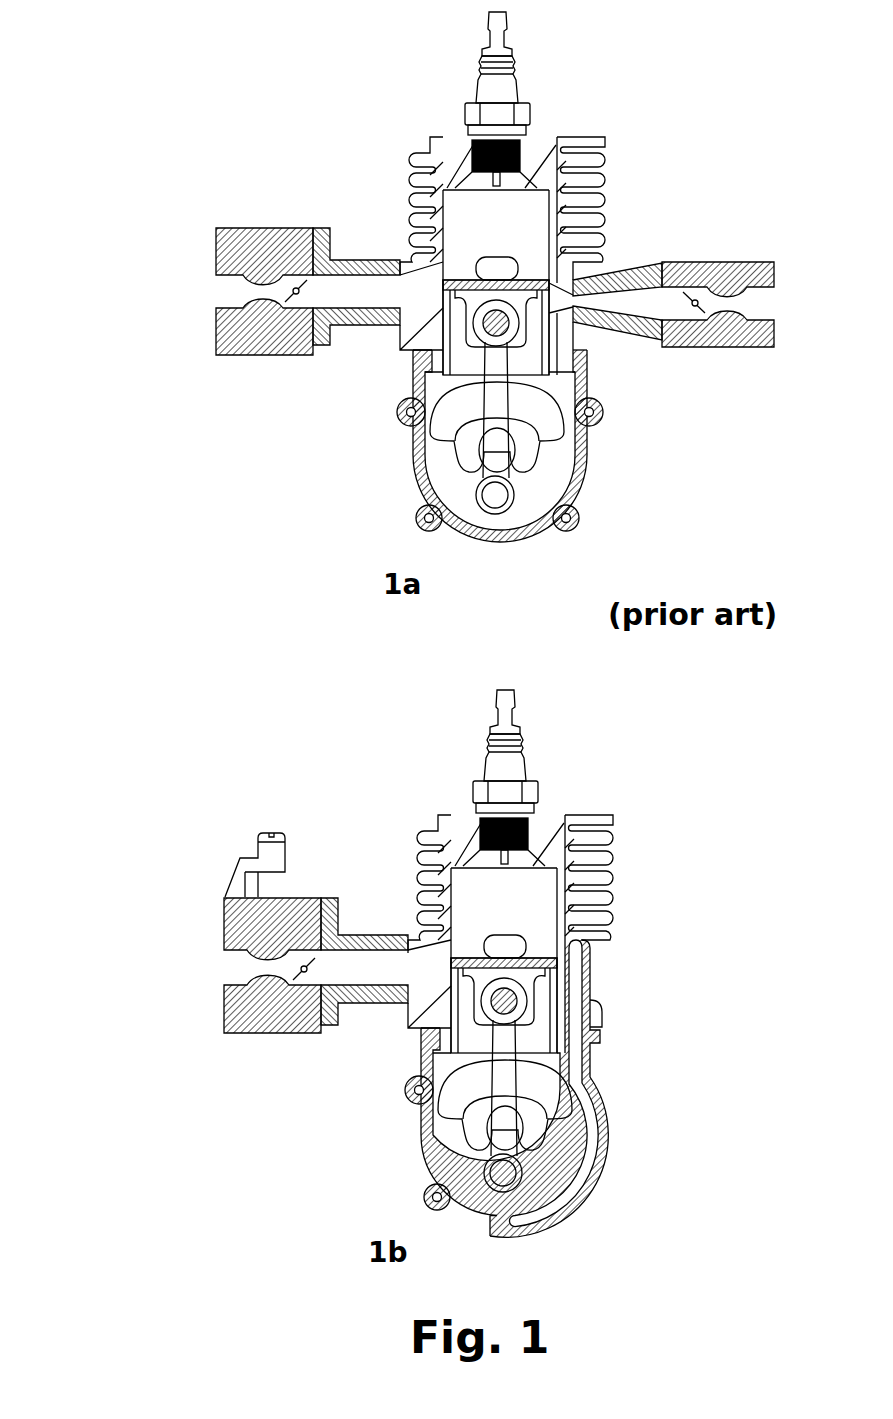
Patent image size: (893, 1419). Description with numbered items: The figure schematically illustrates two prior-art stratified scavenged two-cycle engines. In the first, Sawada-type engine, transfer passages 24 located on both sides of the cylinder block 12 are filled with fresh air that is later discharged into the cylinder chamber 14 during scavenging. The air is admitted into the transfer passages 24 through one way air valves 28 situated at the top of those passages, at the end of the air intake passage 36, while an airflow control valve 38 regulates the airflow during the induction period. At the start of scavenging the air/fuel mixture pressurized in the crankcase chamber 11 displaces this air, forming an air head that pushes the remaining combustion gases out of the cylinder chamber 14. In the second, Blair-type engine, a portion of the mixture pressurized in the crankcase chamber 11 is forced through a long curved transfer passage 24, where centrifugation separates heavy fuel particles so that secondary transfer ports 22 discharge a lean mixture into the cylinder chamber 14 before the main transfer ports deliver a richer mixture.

The crankcase chamber 11 is at (543, 460).
The cylinder block 12 is at (547, 146).
The cylinder chamber 14 is at (527, 213).
The secondary transfer ports 22 is at (568, 937).
The transfer passages 24 is at (600, 362).
The one way air valves 28 is at (602, 322).
The air intake passage 36 is at (613, 297).
The airflow control valve 38 is at (693, 297).